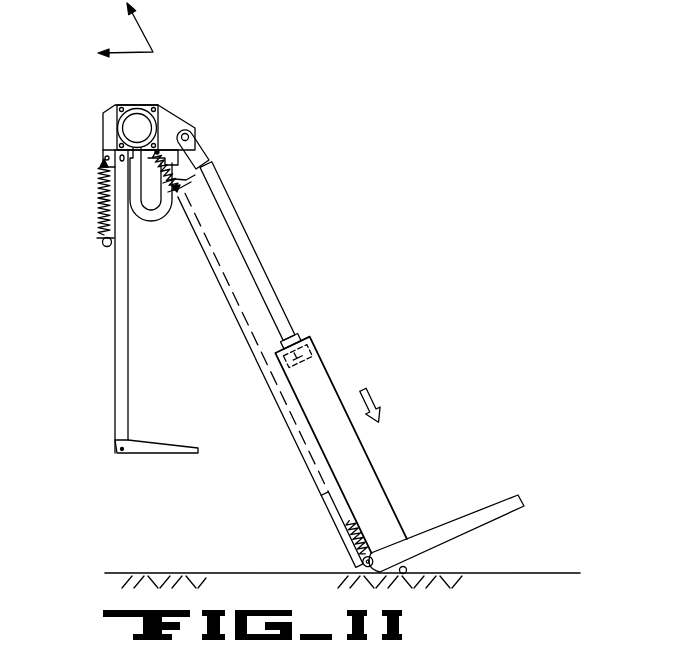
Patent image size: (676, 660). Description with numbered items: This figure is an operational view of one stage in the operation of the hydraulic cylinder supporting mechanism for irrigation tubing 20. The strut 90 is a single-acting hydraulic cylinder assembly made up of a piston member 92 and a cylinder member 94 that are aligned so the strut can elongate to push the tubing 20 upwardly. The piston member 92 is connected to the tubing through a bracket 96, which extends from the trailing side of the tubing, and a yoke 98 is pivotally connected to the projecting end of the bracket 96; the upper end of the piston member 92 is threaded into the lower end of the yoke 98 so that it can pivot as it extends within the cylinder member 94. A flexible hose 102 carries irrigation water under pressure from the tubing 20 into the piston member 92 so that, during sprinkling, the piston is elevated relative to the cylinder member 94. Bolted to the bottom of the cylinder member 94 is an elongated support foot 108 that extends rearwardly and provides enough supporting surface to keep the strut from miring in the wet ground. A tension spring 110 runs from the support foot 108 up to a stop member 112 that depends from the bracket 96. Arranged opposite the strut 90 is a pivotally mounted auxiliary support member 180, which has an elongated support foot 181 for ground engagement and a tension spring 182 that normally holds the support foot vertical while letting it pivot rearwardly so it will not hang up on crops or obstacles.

The tubing 20 is at (115, 110).
The bracket 96 is at (168, 119).
The yoke 98 is at (197, 146).
The stop member 112 is at (160, 158).
The tension spring 110 is at (163, 178).
The tension spring 182 is at (98, 202).
The flexible hose 102 is at (166, 222).
The auxiliary support member 180 is at (115, 320).
The support foot 181 is at (117, 453).
The strut 90 is at (335, 361).
The piston member 92 is at (256, 277).
The cylinder member 94 is at (360, 473).
The support foot 108 is at (478, 521).